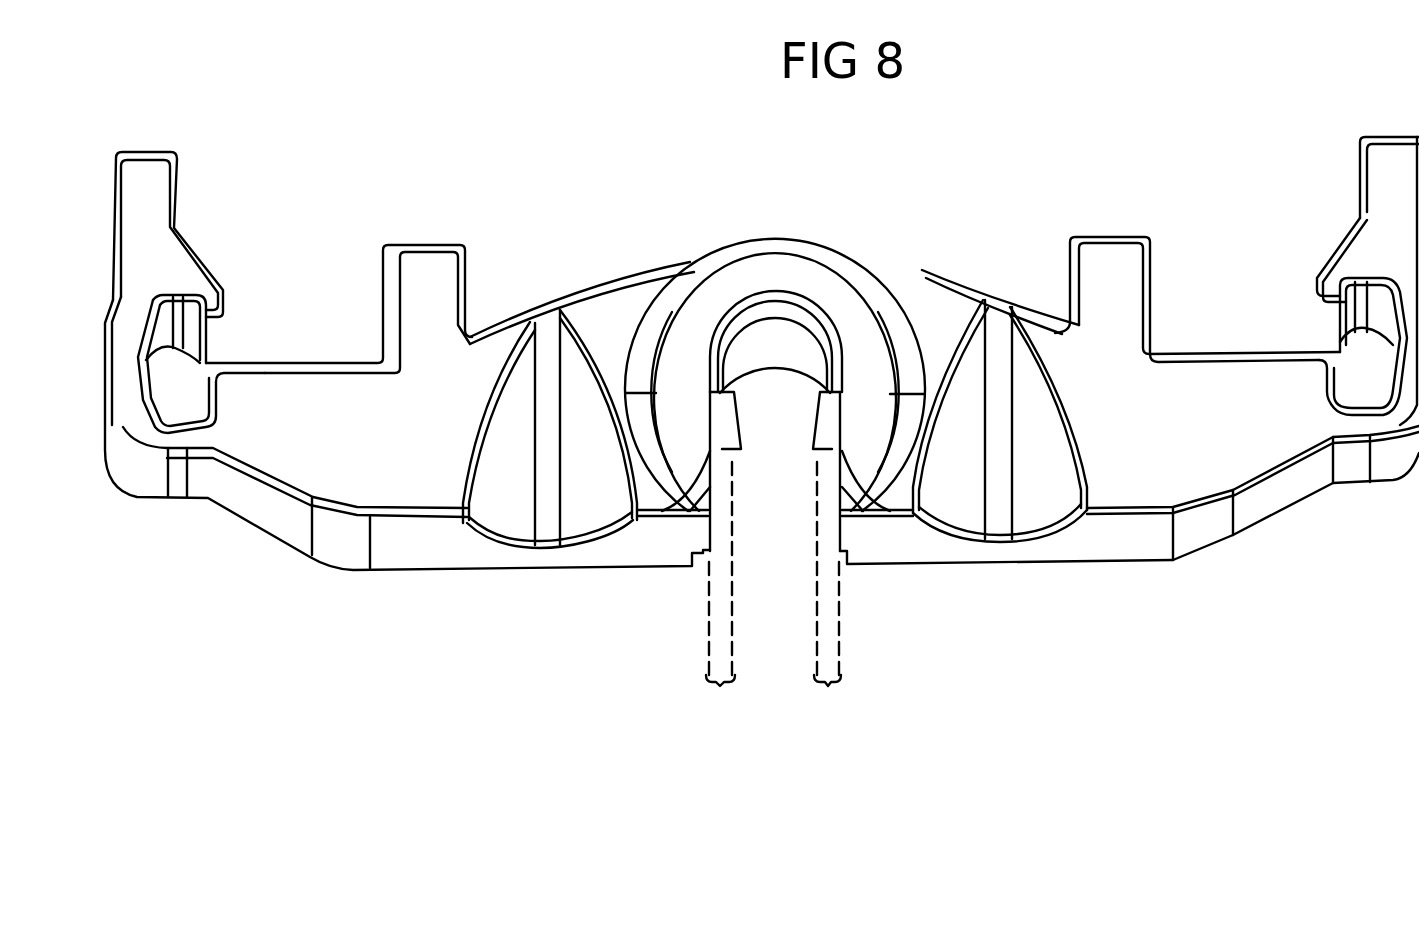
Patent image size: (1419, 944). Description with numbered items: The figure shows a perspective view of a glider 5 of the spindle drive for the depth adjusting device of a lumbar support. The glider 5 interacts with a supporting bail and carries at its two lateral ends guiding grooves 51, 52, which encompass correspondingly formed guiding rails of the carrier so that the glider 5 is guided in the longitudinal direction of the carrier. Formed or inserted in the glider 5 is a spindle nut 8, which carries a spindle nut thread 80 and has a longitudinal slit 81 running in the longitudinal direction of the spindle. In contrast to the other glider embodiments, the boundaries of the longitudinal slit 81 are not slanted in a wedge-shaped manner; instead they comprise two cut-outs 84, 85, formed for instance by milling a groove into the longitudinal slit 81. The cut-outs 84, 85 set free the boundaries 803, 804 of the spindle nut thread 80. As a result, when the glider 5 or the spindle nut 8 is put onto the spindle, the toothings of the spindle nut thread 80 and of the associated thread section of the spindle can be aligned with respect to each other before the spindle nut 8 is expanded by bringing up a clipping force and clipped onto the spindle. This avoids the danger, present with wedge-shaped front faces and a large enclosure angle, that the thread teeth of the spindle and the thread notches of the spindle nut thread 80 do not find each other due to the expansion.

The glider 5 is at (412, 495).
The guiding groove 51 is at (178, 405).
The guiding groove 52 is at (1368, 395).
The spindle nut 8 is at (778, 268).
The spindle nut thread 80 is at (802, 319).
The longitudinal slit 81 is at (780, 410).
The boundary of the spindle nut thread 803 is at (712, 395).
The boundary of the spindle nut thread 804 is at (840, 387).
The cut-out 84 is at (721, 688).
The cut-out 85 is at (827, 688).